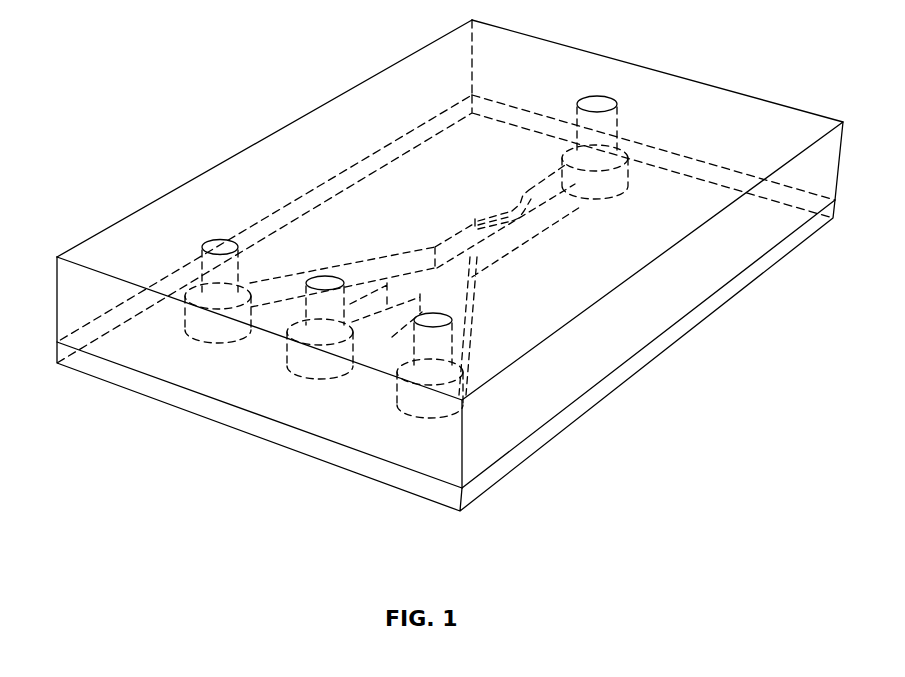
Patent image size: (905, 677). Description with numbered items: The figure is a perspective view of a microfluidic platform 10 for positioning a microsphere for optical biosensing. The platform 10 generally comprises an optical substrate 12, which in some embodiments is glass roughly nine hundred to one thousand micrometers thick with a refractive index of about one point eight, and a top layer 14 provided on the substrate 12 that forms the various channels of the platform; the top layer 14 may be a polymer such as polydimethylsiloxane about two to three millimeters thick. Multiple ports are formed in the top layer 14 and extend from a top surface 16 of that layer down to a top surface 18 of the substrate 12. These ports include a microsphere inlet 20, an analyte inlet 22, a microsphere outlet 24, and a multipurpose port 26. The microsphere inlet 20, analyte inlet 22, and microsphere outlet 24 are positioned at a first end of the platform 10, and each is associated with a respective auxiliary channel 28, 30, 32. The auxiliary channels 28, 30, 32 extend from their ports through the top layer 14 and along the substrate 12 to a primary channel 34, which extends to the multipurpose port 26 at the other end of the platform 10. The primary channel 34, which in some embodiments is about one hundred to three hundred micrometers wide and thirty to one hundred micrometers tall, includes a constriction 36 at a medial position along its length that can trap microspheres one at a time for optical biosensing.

The microfluidic platform 10 is at (104, 104).
The optical substrate 12 is at (107, 369).
The top layer 14 is at (66, 272).
The top surface 16 is at (153, 217).
The top surface 18 is at (520, 427).
The microsphere inlet 20 is at (218, 242).
The analyte inlet 22 is at (323, 278).
The microsphere outlet 24 is at (450, 318).
The multipurpose port 26 is at (584, 101).
The auxiliary channel 28 is at (286, 283).
The auxiliary channel 30 is at (362, 338).
The auxiliary channel 32 is at (456, 293).
The primary channel 34 is at (465, 243).
The constriction 36 is at (493, 197).